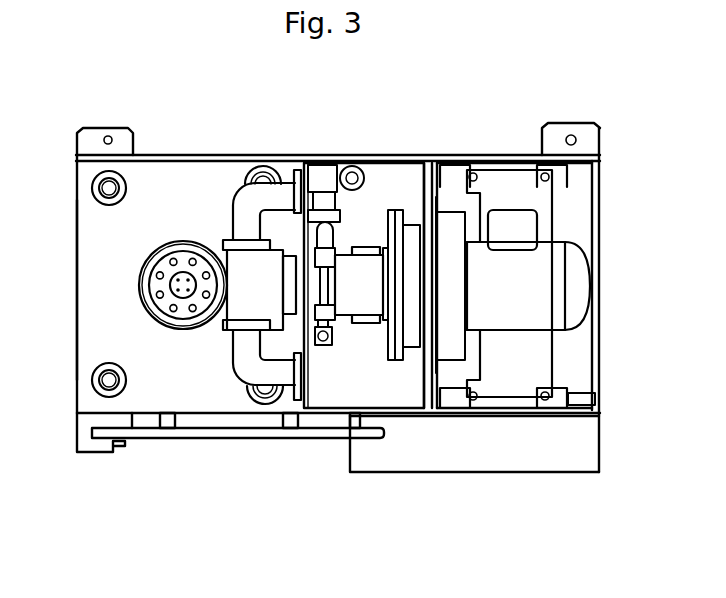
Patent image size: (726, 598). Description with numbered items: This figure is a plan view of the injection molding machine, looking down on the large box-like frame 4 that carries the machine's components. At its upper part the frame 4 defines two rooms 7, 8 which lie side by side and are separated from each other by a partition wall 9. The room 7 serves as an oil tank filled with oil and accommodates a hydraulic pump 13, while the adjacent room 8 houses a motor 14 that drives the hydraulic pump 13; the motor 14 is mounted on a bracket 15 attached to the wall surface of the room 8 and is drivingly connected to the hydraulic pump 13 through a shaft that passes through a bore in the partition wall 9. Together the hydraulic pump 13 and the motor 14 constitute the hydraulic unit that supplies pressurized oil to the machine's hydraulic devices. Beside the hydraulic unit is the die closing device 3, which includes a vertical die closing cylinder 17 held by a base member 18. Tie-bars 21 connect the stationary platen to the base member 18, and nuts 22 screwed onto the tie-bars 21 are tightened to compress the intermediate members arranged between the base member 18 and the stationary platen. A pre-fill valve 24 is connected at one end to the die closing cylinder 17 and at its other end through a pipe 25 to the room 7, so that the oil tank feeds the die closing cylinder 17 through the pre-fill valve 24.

The die closing device 3 is at (155, 170).
The frame 4 is at (600, 226).
The room 7 is at (343, 389).
The room 8 is at (568, 361).
The partition wall 9 is at (425, 178).
The hydraulic pump 13 is at (362, 268).
The motor 14 is at (518, 318).
The bracket 15 is at (446, 163).
The die closing cylinder 17 is at (176, 328).
The base member 18 is at (76, 291).
The tie-bars 21 is at (104, 183).
The nuts 22 is at (102, 200).
The pre-fill valve 24 is at (240, 262).
The pipe 25 is at (246, 200).